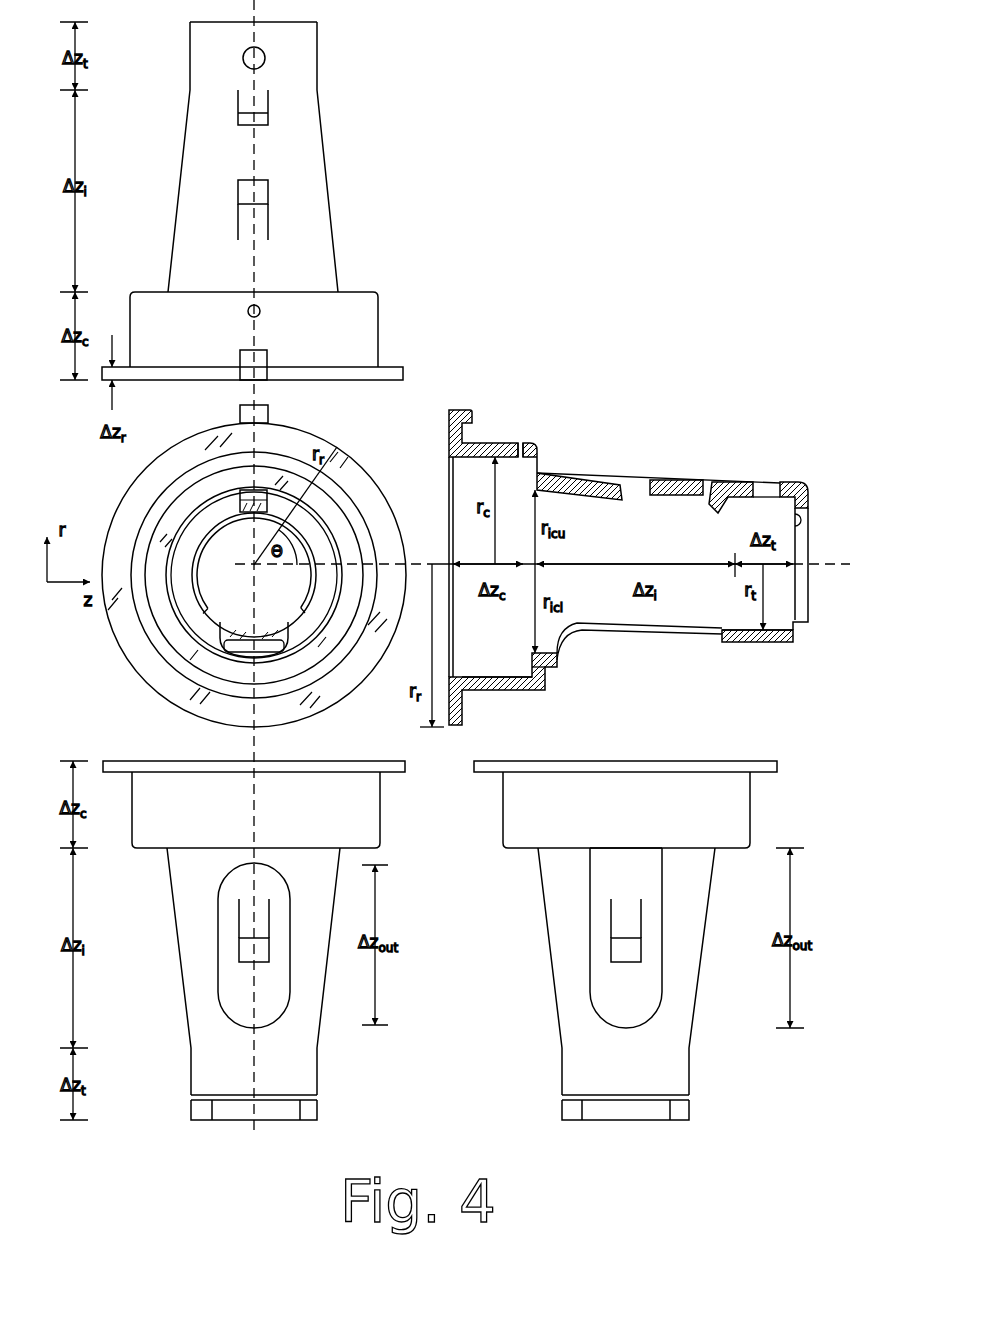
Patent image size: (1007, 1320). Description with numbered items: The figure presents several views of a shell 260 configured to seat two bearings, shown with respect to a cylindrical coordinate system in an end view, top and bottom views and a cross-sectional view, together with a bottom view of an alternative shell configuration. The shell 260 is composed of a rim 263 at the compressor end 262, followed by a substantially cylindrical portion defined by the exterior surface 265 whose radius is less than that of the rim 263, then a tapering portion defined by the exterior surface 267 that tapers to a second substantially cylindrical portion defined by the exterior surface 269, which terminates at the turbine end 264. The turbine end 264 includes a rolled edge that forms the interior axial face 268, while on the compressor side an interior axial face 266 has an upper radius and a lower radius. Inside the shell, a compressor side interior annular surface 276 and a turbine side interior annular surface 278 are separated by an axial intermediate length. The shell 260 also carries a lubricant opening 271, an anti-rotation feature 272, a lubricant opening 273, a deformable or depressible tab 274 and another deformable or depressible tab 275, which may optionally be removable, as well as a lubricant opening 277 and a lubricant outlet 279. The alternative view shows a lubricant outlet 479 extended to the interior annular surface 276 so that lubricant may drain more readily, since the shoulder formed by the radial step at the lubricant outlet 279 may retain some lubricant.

The shell 260 is at (172, 12).
The compressor end 262 is at (449, 443).
The rim 263 is at (392, 368).
The turbine end 264 is at (317, 22).
The exterior surface 265 is at (365, 325).
The interior axial face 266 is at (174, 630).
The exterior surface 267 is at (326, 247).
The interior axial face 268 is at (193, 583).
The exterior surface 269 is at (312, 58).
The lubricant opening 271 is at (248, 311).
The anti-rotation feature 272 is at (240, 353).
The lubricant opening 273 is at (240, 181).
The deformable or depressible tab 274 is at (238, 213).
The deformable or depressible tab 275 is at (245, 108).
The interior annular surface 276 is at (467, 675).
The lubricant opening 277 is at (247, 50).
The interior annular surface 278 is at (732, 630).
The lubricant outlet 279 is at (218, 647).
The alternative lubricant outlet 479 is at (590, 942).